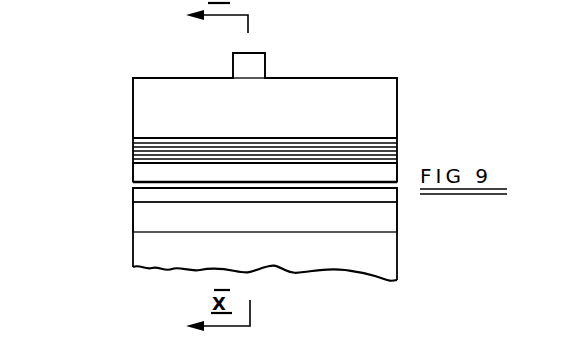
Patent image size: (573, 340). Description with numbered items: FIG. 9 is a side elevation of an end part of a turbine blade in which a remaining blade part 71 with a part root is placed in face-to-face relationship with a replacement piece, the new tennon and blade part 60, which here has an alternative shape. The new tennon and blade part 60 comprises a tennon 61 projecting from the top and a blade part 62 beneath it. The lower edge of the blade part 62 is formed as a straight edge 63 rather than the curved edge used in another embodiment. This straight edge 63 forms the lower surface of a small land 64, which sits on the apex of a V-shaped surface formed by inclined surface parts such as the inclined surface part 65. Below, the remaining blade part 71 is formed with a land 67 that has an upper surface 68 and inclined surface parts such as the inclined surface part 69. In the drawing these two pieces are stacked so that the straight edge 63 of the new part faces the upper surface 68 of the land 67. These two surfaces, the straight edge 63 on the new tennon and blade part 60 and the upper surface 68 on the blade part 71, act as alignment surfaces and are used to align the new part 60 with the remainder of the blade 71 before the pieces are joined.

The new tennon and blade part 60 is at (412, 66).
The tennon 61 is at (257, 70).
The blade part 62 is at (390, 118).
The straight edge 63 is at (397, 182).
The small land 64 is at (150, 172).
The inclined surface part 65 is at (392, 153).
The land 67 is at (150, 198).
The upper surface 68 is at (397, 188).
The inclined surface part 69 is at (182, 220).
The blade part 71 is at (108, 255).